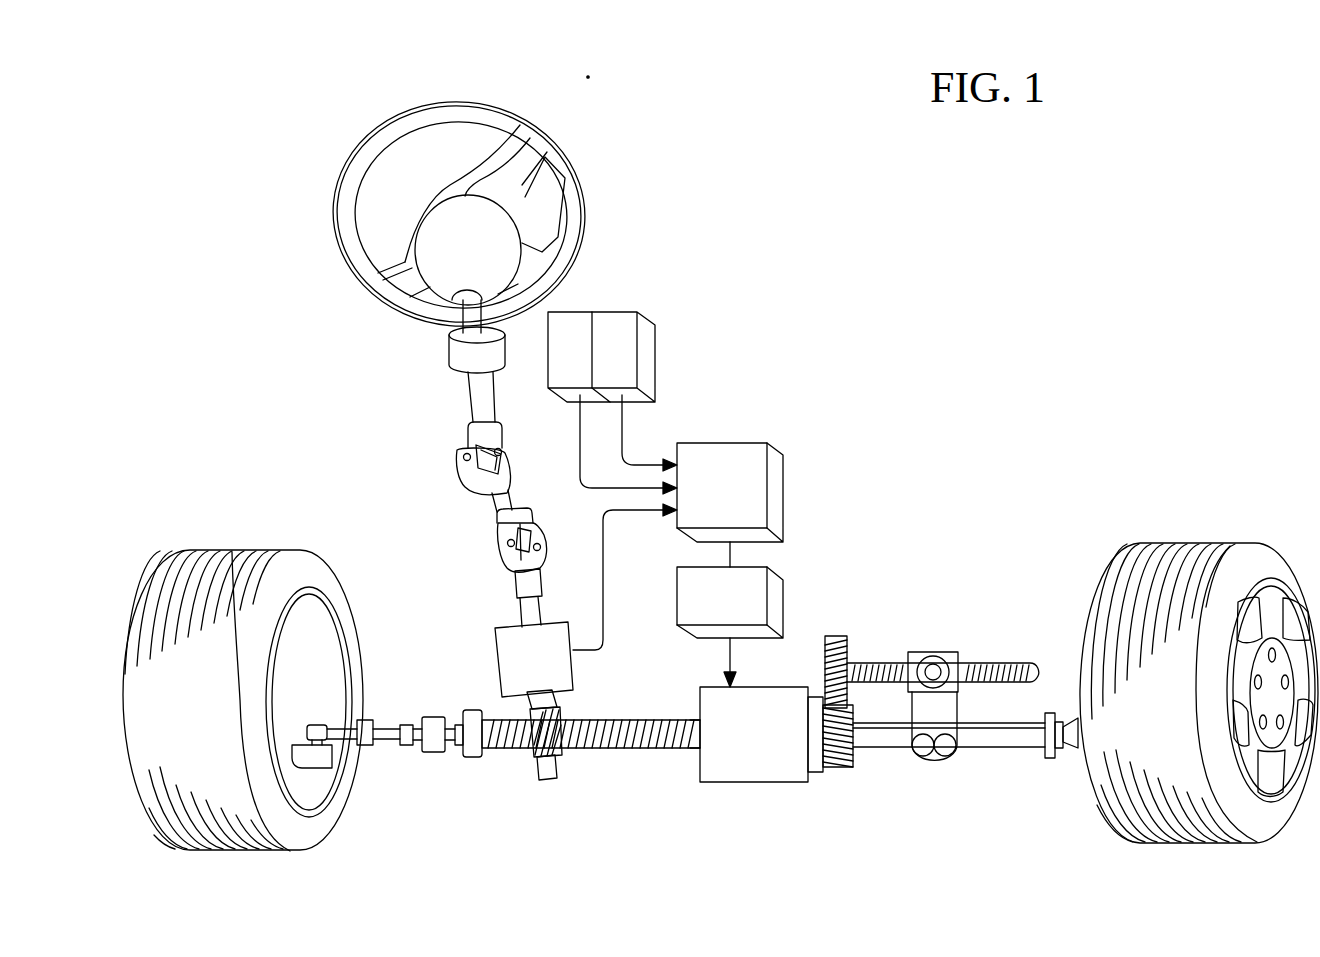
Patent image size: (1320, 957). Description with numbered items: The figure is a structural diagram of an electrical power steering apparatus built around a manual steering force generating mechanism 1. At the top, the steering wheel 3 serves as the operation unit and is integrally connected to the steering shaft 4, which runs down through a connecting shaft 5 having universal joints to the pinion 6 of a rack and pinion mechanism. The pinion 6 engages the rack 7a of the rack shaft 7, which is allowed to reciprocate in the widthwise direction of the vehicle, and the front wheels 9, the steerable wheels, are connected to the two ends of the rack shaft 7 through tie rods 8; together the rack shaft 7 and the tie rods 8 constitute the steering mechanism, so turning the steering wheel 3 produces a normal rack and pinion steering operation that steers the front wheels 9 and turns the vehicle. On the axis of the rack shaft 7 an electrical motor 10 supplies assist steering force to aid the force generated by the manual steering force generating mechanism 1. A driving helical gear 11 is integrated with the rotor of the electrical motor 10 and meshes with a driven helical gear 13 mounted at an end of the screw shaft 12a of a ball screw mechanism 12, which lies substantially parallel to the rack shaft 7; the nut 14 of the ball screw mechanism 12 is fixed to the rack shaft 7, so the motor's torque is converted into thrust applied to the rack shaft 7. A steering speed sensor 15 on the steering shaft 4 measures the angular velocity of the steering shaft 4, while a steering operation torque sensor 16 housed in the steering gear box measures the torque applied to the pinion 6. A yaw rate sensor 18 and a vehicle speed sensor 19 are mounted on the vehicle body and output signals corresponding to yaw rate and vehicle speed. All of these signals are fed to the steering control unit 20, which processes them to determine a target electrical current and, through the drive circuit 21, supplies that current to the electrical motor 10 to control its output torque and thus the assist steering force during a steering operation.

The manual steering force generating mechanism 1 is at (448, 458).
The steering wheel 3 is at (572, 160).
The steering shaft 4 is at (475, 404).
The intermediate shaft 5 is at (485, 522).
The pinion 6 is at (528, 755).
The rack shaft 7 is at (895, 750).
The rack 7a is at (625, 750).
The tie rods 8 is at (383, 742).
The front wheels 9 is at (215, 550).
The electrical motor 10 is at (750, 782).
The driving helical gear 11 is at (835, 767).
The ball screw mechanism 12 is at (938, 642).
The screw shaft 12a is at (1025, 663).
The driven helical gear 13 is at (837, 636).
The nut 14 is at (916, 652).
The steering speed sensor 15 is at (453, 354).
The steering operation torque sensor 16 is at (575, 670).
The yaw rate sensor 18 is at (628, 312).
The vehicle speed sensor 19 is at (568, 312).
The steering control unit 20 is at (773, 470).
The drive circuit 21 is at (773, 582).